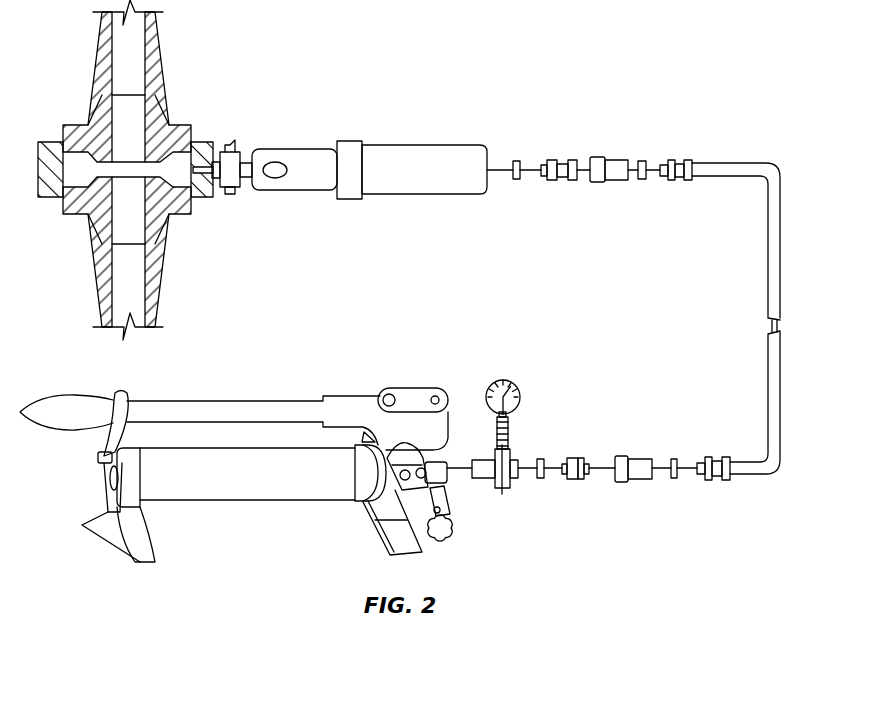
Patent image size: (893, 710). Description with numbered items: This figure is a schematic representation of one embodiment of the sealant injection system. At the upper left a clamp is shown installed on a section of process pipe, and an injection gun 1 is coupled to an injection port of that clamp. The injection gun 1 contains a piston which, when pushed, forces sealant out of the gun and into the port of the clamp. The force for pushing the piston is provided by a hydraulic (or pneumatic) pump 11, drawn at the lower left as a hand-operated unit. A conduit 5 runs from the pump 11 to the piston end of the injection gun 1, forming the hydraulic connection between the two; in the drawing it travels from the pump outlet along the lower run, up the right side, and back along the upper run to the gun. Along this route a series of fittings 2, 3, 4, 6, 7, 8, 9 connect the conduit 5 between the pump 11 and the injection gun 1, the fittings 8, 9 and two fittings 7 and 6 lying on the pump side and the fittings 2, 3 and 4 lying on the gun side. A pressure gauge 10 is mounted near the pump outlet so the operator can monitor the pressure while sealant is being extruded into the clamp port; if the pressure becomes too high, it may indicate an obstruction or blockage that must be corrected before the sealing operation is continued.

The injection gun 1 is at (423, 144).
The fitting 2 is at (517, 158).
The fitting 3 is at (563, 178).
The fitting 4 is at (643, 158).
The conduit 5 is at (782, 313).
The fitting 6 is at (676, 457).
The fitting 7 is at (573, 479).
The fitting 8 is at (543, 457).
The fitting 9 is at (512, 479).
The pressure gauge 10 is at (512, 378).
The hydraulic pump 11 is at (413, 388).